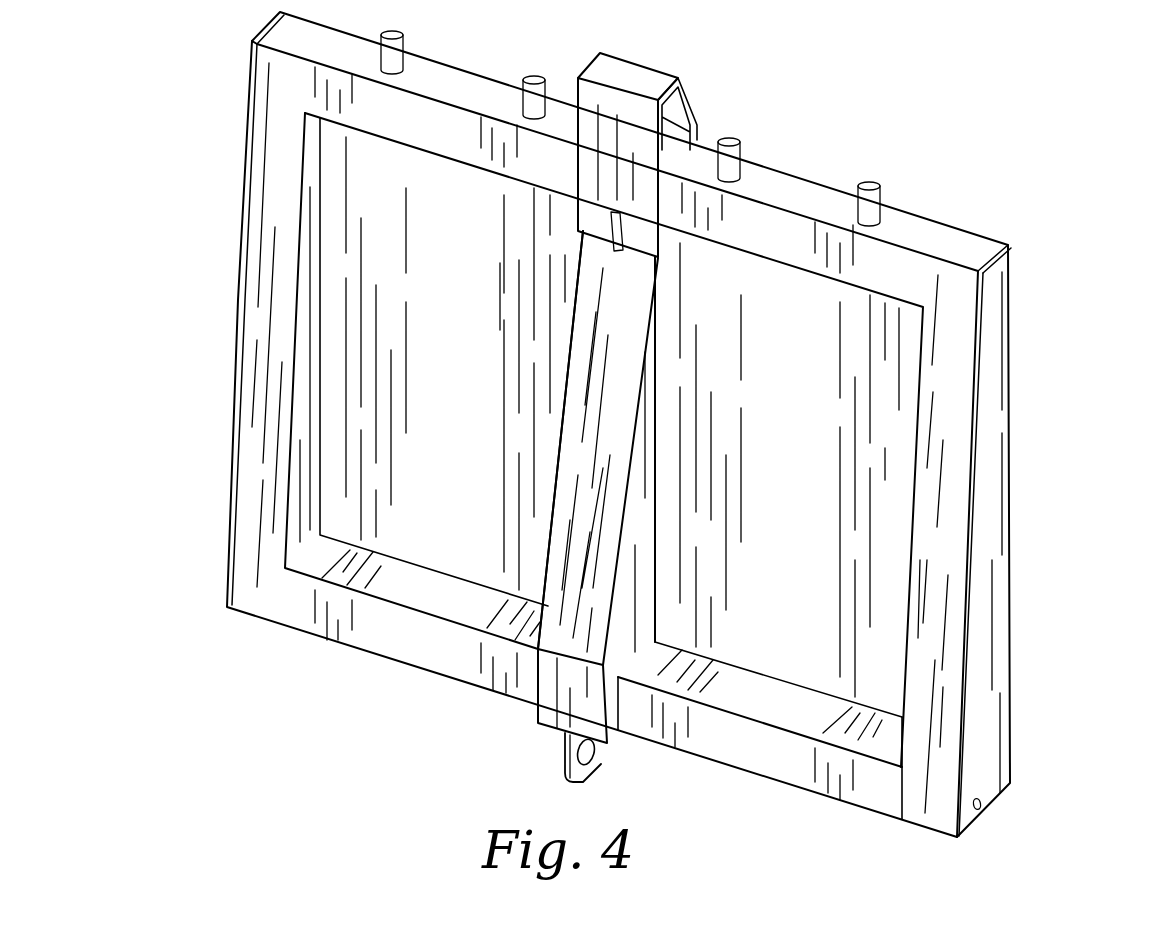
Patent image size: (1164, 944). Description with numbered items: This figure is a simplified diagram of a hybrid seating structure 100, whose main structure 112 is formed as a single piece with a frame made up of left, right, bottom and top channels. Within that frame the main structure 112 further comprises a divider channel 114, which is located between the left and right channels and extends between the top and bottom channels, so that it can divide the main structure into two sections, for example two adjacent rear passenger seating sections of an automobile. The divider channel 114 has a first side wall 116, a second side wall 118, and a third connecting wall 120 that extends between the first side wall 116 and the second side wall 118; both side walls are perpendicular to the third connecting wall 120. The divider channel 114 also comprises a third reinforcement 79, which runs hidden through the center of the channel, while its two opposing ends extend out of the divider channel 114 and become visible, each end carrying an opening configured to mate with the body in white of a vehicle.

The hybrid seating structure 100 is at (996, 91).
The main structure 112 is at (290, 624).
The divider channel 114 is at (562, 455).
The first side wall 116 is at (637, 500).
The second side wall 118 is at (557, 503).
The third connecting wall 120 is at (617, 375).
The third reinforcement 79 is at (632, 78).